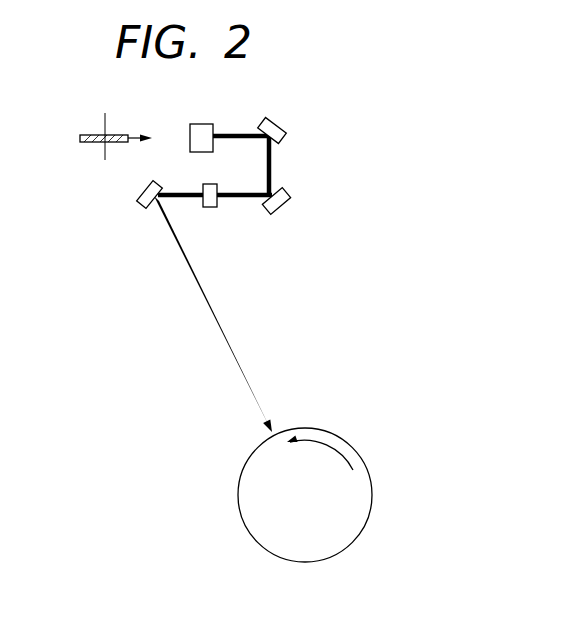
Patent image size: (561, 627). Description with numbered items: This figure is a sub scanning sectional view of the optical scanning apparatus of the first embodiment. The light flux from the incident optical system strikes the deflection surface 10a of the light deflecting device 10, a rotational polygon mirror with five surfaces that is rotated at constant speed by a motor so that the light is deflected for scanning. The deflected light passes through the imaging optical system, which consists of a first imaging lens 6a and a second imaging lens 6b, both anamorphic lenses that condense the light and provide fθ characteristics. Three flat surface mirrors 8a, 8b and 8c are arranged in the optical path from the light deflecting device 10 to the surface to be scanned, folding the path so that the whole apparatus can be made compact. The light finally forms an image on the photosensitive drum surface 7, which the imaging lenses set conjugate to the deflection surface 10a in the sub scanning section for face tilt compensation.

The light deflecting device 10 is at (85, 134).
The deflection surface 10a is at (127, 134).
The first imaging lens 6a is at (204, 124).
The second imaging lens 6b is at (211, 207).
The flat surface mirror 8a is at (279, 120).
The flat surface mirror 8b is at (285, 210).
The flat surface mirror 8c is at (143, 206).
The photosensitive drum surface 7 is at (368, 467).